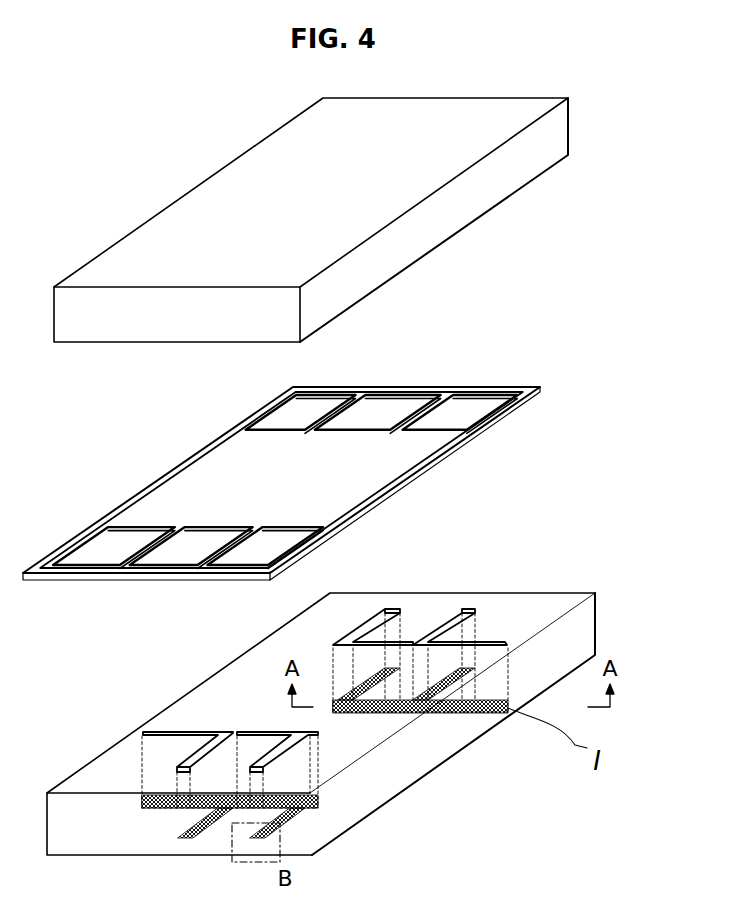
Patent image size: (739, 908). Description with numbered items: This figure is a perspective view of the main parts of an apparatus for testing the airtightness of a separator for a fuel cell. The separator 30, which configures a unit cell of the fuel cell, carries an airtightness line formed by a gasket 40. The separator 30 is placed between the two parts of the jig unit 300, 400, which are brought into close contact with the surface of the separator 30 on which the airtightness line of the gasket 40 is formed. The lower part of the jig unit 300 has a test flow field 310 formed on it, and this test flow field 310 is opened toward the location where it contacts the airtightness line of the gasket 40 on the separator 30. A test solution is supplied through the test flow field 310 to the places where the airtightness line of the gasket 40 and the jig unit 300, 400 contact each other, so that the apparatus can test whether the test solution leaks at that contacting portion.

The jig unit 400 is at (128, 253).
The separator 30 is at (185, 485).
The gasket 40 is at (73, 538).
The test flow field 310 is at (395, 607).
The jig unit 300 is at (188, 692).